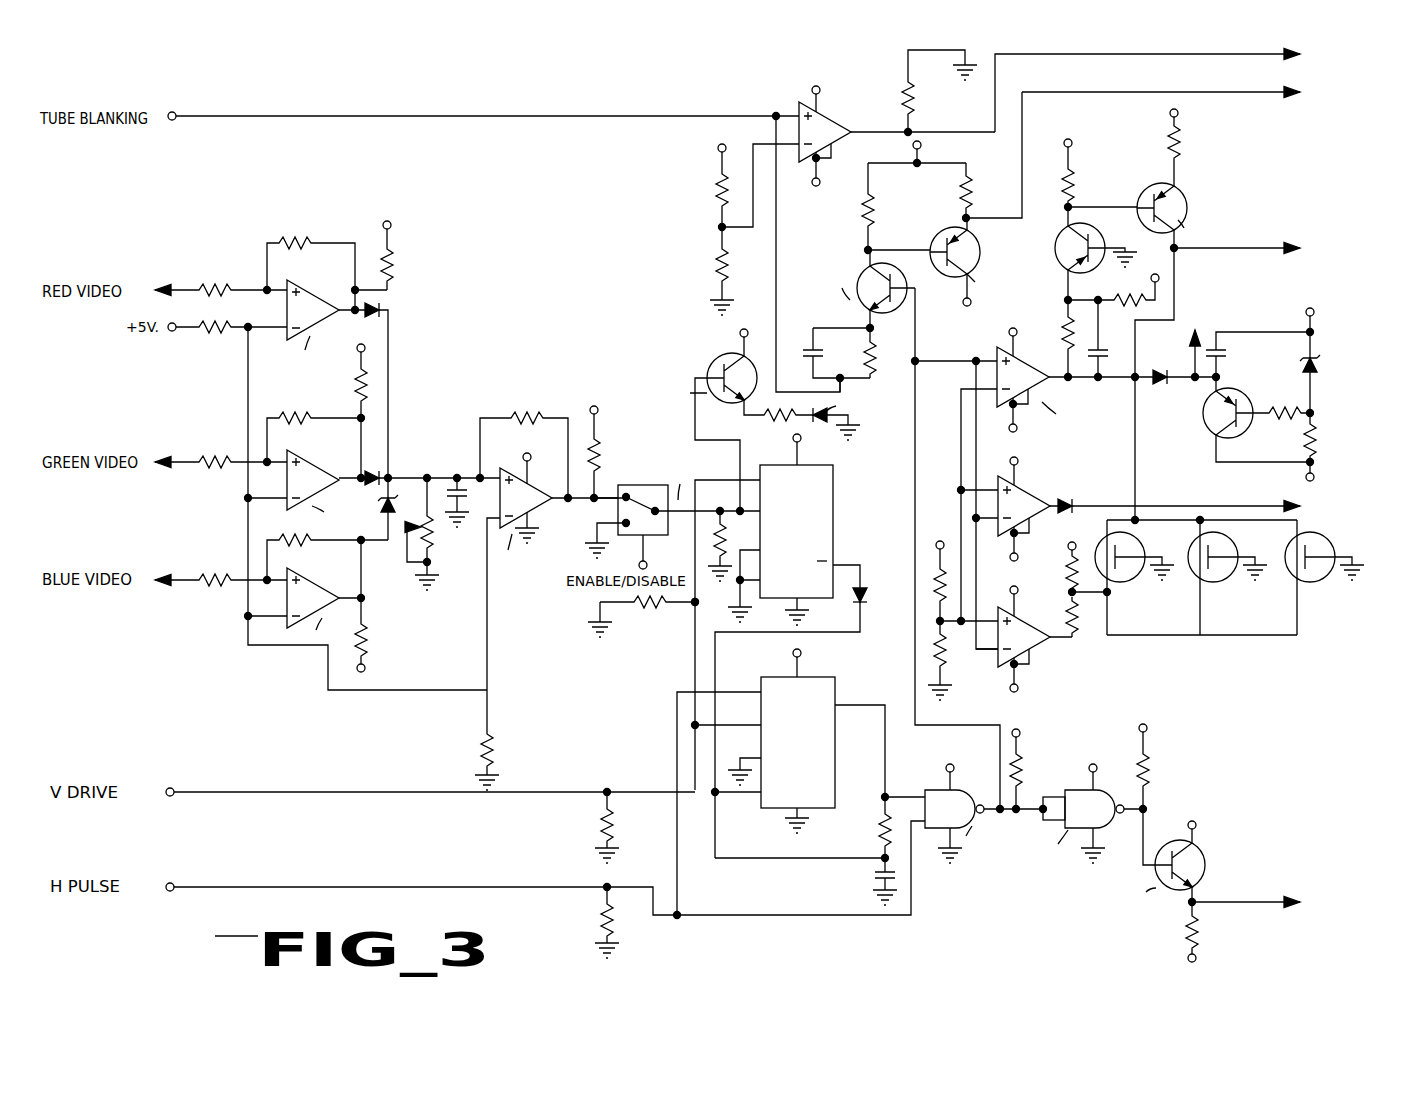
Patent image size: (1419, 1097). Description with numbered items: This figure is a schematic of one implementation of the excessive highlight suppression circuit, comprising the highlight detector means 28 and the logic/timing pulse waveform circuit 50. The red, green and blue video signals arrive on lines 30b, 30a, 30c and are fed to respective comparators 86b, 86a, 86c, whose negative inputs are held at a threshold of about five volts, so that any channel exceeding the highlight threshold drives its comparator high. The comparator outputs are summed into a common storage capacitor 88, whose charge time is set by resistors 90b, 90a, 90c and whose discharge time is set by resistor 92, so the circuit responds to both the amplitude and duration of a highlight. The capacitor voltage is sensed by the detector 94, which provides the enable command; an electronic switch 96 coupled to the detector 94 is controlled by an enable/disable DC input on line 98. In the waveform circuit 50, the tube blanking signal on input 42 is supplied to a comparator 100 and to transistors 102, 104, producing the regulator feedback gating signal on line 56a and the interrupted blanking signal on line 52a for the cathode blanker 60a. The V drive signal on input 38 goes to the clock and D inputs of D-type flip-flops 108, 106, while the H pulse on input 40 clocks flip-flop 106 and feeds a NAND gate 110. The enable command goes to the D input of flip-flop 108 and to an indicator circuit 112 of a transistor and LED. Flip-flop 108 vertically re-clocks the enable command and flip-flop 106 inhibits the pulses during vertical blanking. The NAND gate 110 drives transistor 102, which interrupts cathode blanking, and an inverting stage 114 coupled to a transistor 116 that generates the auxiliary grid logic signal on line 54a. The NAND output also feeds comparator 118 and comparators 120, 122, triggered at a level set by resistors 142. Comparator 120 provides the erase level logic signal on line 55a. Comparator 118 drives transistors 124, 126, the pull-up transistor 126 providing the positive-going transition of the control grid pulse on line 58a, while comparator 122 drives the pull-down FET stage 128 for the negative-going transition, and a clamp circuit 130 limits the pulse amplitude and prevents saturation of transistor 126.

The tube blanking input 42 is at (173, 112).
The red video line 30b is at (184, 288).
The green video line 30a is at (184, 460).
The blue video line 30c is at (184, 578).
The highlight detector means 28 is at (432, 368).
The red comparator 86b is at (312, 295).
The green comparator 86a is at (316, 463).
The blue comparator 86c is at (316, 581).
The charge resistor 90b is at (392, 262).
The charge resistor 90a is at (376, 380).
The charge resistor 90c is at (374, 636).
The discharge resistor 92 is at (433, 548).
The storage capacitor 88 is at (453, 476).
The detector 94 is at (538, 514).
The electronic switch 96 is at (628, 500).
The enable/disable line 98 is at (647, 567).
The D-type flip-flop 108 is at (836, 510).
The D-type flip-flop 106 is at (834, 690).
The V drive input 38 is at (170, 788).
The H pulse input 40 is at (170, 883).
The NAND gate 110 is at (928, 786).
The inverting stage 114 is at (1058, 786).
The transistor 116 is at (1202, 864).
The auxiliary grid logic line 54a is at (1252, 900).
The comparator 100 is at (832, 126).
The logic/timing pulse waveform circuit 50 is at (688, 350).
The regulator feedback gating line 56a is at (1270, 58).
The interrupted blanking line 52a is at (1270, 98).
The transistor 104 is at (940, 230).
The transistor 102 is at (859, 282).
The transistor 124 is at (1055, 247).
The pull-up transistor 126 is at (1144, 200).
The control grid pulse line 58a is at (1256, 248).
The cathode blanker 60a is at (1227, 335).
The comparator 118 is at (1040, 383).
The comparator 120 is at (1038, 500).
The erase level logic line 55a is at (1256, 505).
The comparator 122 is at (1038, 626).
The resistors 142 is at (928, 658).
The pull-down FET stage 128 is at (1195, 603).
The clamp circuit 130 is at (1324, 344).
The indicator circuit 112 is at (782, 424).